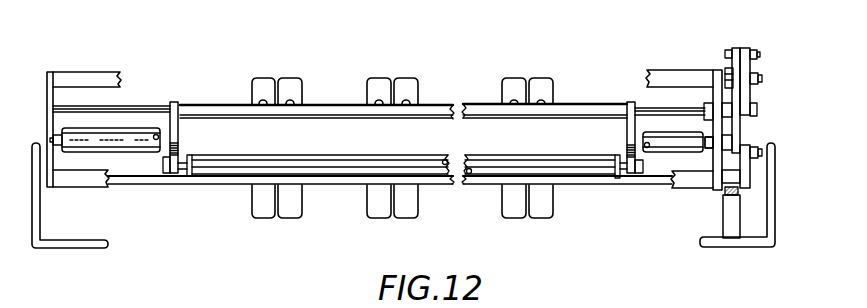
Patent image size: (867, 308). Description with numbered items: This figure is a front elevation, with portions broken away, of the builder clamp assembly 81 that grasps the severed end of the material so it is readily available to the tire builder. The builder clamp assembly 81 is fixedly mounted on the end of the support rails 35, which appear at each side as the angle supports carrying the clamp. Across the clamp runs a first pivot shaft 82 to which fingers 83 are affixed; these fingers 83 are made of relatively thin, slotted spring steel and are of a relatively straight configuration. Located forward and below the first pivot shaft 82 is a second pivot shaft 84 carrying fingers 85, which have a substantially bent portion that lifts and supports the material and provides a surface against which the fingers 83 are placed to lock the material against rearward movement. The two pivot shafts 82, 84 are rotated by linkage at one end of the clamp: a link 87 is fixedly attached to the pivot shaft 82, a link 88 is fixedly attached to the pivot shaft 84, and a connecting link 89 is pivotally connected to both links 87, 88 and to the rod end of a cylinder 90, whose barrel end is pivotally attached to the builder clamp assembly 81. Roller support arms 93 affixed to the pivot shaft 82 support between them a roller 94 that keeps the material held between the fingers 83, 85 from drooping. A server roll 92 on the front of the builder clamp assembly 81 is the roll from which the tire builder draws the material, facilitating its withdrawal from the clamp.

The support rails 35 is at (48, 249).
The builder clamp assembly 81 is at (379, 160).
The first pivot shaft 82 is at (203, 105).
The fingers 83 is at (293, 84).
The pivot shaft 84 is at (145, 185).
The fingers 85 is at (353, 203).
The link 87 is at (751, 97).
The link 88 is at (749, 172).
The connecting link 89 is at (740, 130).
The cylinder 90 is at (726, 70).
The server roll 92 is at (133, 128).
The roller support arms 93 is at (179, 131).
The roller 94 is at (356, 162).